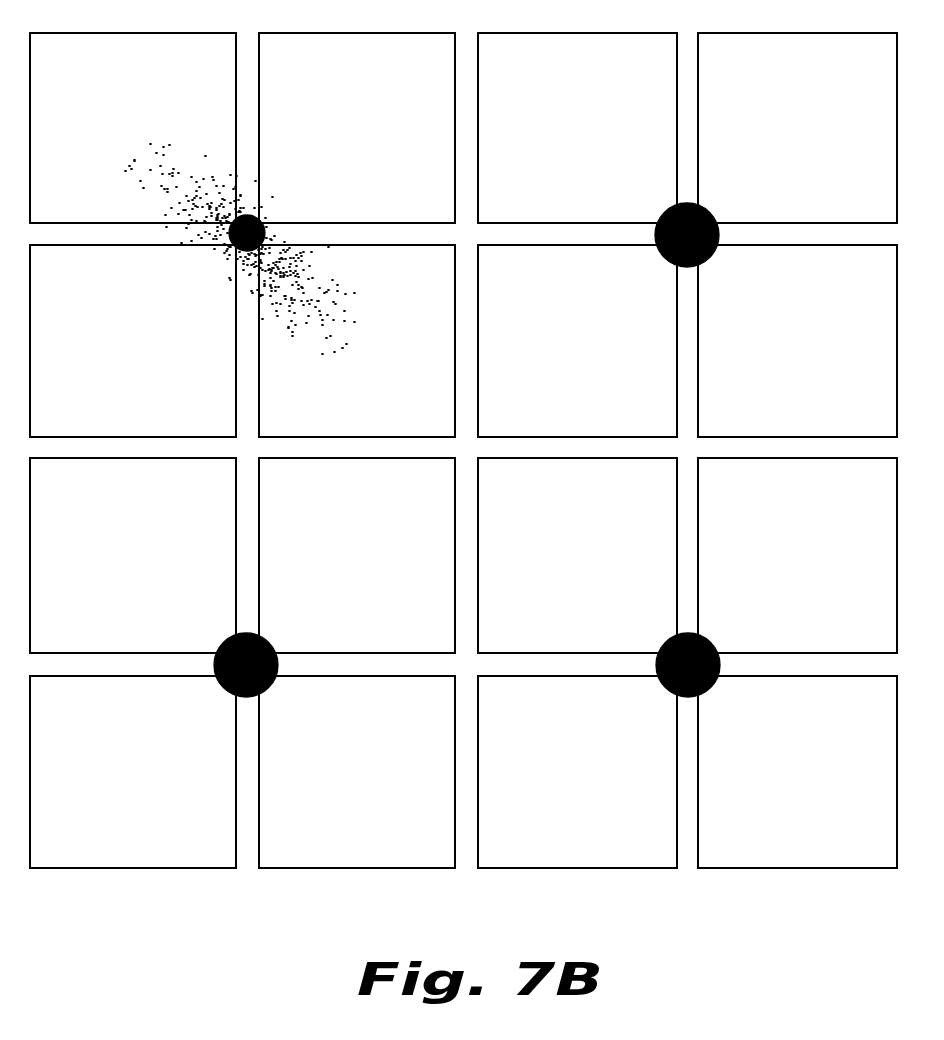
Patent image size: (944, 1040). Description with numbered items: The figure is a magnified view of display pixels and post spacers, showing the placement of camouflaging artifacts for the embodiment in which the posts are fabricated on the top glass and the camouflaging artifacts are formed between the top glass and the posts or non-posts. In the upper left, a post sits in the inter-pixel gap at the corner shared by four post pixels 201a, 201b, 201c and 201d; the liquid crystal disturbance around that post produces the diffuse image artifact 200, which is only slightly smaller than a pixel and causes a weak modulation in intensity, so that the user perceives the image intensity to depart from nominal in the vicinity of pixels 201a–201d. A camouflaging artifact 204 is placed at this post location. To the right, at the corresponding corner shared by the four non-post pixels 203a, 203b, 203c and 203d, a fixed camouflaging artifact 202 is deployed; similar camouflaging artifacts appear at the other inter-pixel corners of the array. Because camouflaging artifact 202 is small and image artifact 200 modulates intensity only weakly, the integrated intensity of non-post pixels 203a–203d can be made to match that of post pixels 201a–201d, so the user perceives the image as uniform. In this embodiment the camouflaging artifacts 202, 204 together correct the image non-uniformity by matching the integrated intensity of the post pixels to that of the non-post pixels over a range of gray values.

The image artifact 200 is at (283, 204).
The post pixel 201a is at (90, 147).
The post pixel 201b is at (332, 147).
The post pixel 201c is at (95, 359).
The post pixel 201d is at (330, 387).
The camouflaging artifact 202 is at (713, 210).
The non-post pixel 203a is at (547, 147).
The non-post pixel 203b is at (770, 147).
The non-post pixel 203c is at (548, 357).
The non-post pixel 203d is at (770, 357).
The camouflaging artifact 204 is at (215, 255).